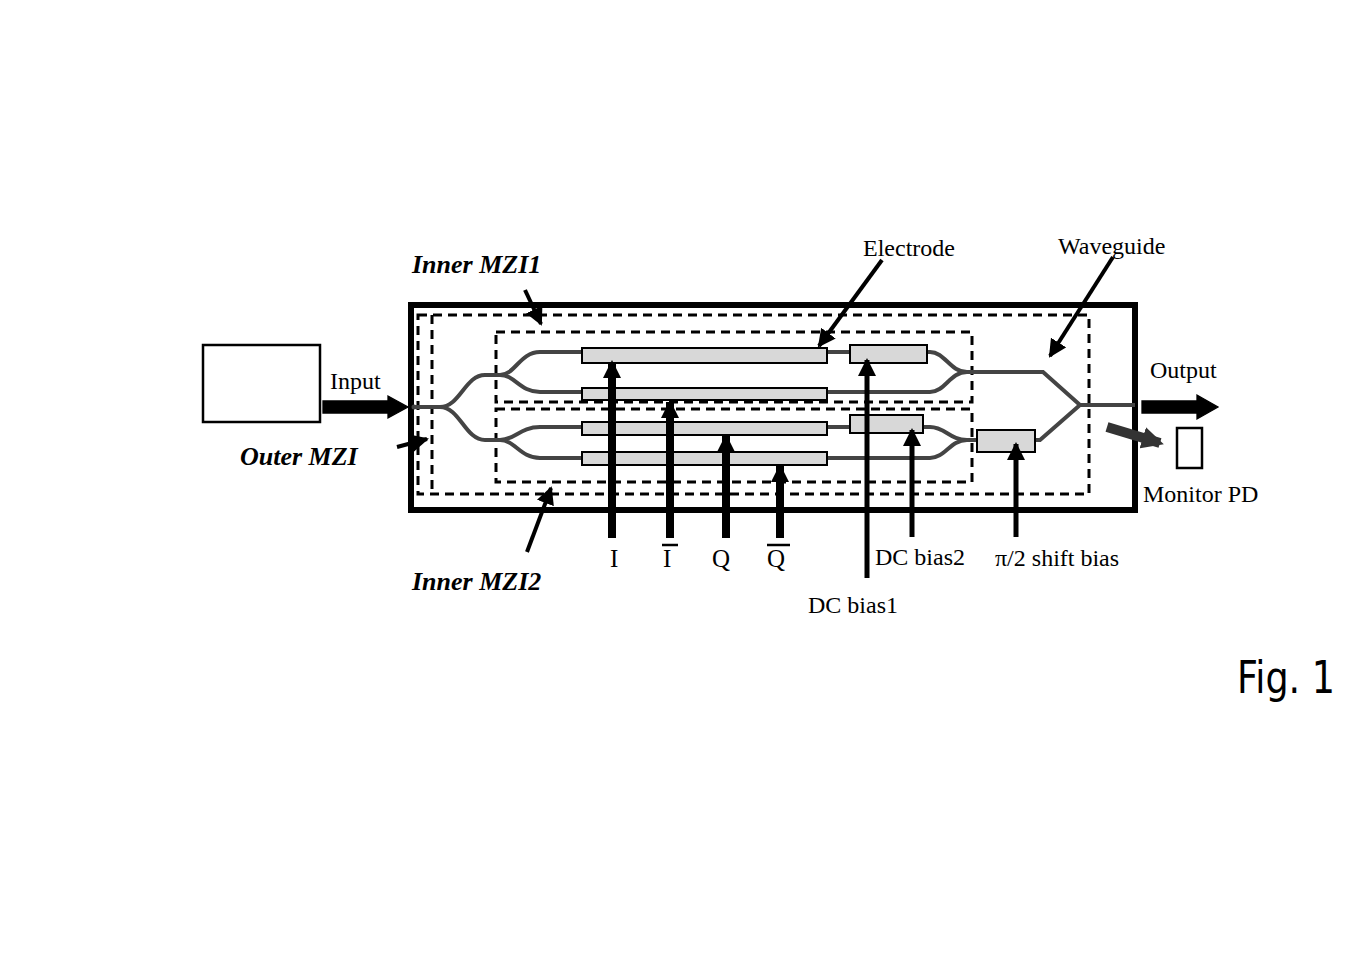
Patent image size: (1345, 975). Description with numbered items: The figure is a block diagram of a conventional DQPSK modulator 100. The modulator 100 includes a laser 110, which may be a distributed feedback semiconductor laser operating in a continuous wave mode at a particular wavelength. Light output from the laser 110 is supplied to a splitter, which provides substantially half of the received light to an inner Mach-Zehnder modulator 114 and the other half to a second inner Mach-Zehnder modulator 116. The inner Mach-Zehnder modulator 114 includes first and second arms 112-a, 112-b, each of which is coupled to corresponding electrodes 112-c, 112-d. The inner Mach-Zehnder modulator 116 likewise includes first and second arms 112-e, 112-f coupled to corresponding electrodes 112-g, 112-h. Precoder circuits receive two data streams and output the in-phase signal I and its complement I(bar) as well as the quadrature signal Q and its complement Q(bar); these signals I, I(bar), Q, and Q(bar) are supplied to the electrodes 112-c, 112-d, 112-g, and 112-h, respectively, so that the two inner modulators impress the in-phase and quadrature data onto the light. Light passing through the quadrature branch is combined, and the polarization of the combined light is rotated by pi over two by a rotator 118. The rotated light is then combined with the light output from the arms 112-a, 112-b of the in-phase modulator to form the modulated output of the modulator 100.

The modulator 100 is at (987, 135).
The laser 110 is at (203, 382).
The first arm 112-a is at (522, 362).
The second arm 112-b is at (537, 390).
The electrode 112-c is at (653, 349).
The electrode 112-d is at (709, 389).
The first arm 112-e is at (535, 421).
The second arm 112-f is at (522, 452).
The electrode 112-g is at (683, 435).
The electrode 112-h is at (737, 465).
The inner Mach-Zehnder modulator 114 is at (630, 313).
The inner Mach-Zehnder modulator 116 is at (565, 483).
The rotator 118 is at (982, 452).